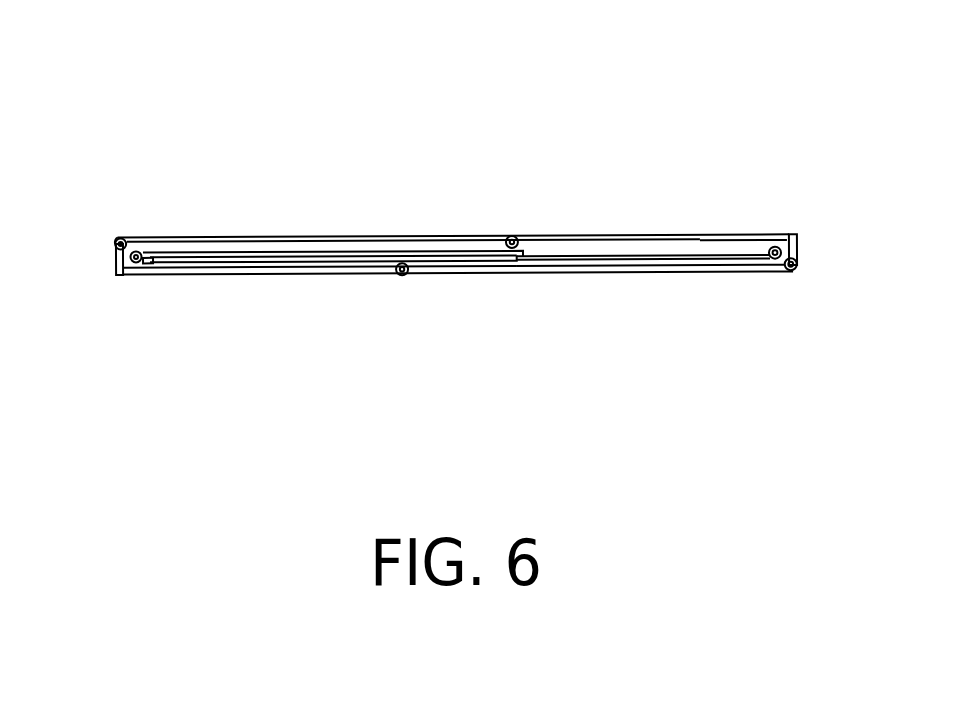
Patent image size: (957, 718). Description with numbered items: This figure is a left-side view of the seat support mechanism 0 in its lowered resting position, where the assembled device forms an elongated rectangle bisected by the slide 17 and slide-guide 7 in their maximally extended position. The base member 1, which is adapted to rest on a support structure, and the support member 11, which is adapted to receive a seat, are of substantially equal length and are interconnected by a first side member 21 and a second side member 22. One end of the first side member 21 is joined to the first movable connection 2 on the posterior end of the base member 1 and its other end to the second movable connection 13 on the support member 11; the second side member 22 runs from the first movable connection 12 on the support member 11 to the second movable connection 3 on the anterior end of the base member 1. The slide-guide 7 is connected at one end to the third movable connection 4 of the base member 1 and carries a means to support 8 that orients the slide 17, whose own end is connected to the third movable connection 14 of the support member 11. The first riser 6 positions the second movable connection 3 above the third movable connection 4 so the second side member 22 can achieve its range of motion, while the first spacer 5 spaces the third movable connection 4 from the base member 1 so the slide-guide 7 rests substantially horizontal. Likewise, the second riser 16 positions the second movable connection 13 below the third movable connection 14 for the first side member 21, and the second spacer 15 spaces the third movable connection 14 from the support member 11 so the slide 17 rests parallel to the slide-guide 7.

The support mechanism 0 is at (570, 130).
The base member 1 is at (220, 284).
The first movable connection 2 is at (403, 286).
The second movable connection 3 is at (108, 242).
The third movable connection 4 is at (136, 244).
The first spacer 5 is at (158, 264).
The first riser 6 is at (109, 268).
The slide-guide 7 is at (316, 243).
The means to support 8 is at (315, 272).
The support member 11 is at (639, 230).
The first movable connection 12 is at (512, 231).
The second movable connection 13 is at (806, 267).
The third movable connection 14 is at (776, 270).
The second spacer 15 is at (757, 244).
The second riser 16 is at (805, 242).
The slide 17 is at (649, 271).
The first side member 21 is at (587, 285).
The second side member 22 is at (390, 227).